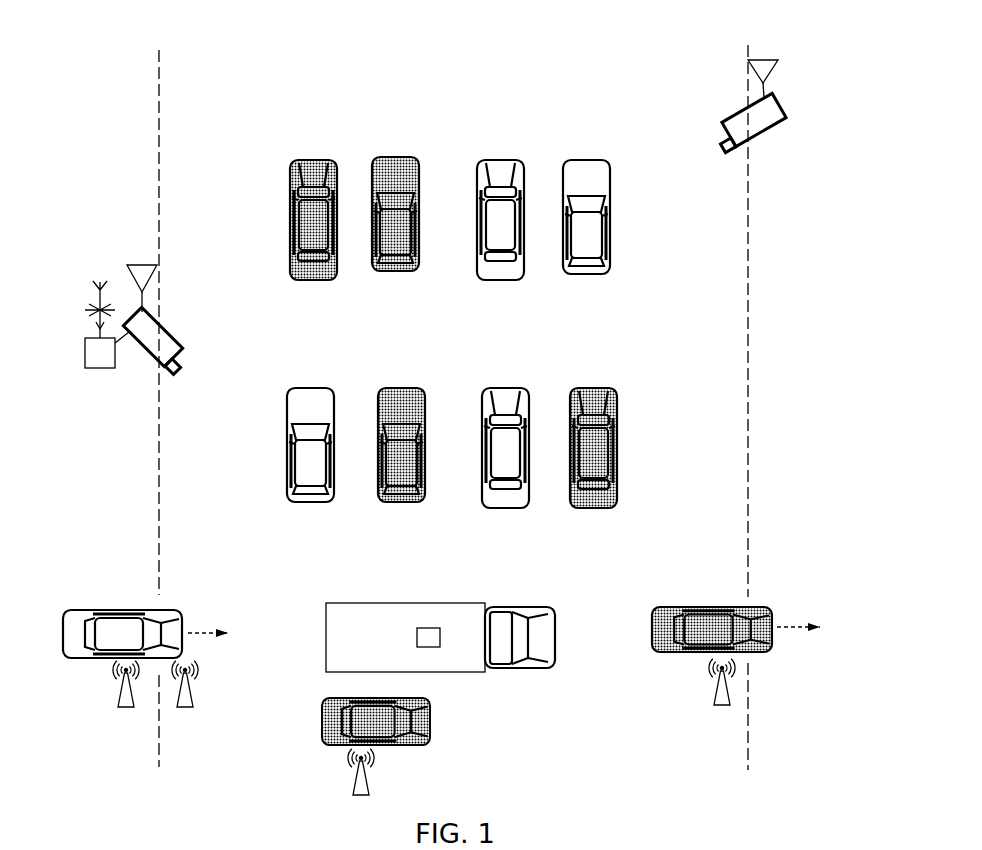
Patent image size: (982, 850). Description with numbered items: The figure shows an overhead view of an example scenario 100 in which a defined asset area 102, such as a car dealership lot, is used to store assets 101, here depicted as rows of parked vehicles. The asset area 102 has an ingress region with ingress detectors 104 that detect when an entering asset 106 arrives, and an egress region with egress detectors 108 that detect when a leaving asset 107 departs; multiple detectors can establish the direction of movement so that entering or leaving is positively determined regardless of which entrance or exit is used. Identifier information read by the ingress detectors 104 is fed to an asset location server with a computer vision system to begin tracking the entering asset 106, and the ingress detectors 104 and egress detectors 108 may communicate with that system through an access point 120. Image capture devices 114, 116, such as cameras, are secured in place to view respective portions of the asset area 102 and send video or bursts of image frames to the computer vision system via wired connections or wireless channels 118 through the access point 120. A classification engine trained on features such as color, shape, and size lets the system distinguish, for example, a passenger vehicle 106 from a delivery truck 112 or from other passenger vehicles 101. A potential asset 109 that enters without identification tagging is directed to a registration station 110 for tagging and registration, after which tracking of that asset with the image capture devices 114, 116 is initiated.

The example scenario 100 is at (480, 86).
The assets 101 is at (533, 316).
The asset area 102 is at (717, 360).
The ingress detectors 104 is at (133, 707).
The entering asset 106 is at (95, 610).
The leaving asset 107 is at (662, 607).
The egress detectors 108 is at (716, 705).
The potential asset 109 is at (421, 719).
The registration station 110 is at (367, 783).
The delivery truck 112 is at (398, 645).
The image capture device 114 is at (190, 349).
The image capture device 116 is at (736, 152).
The wireless channels 118 is at (142, 263).
The access point 120 is at (97, 354).